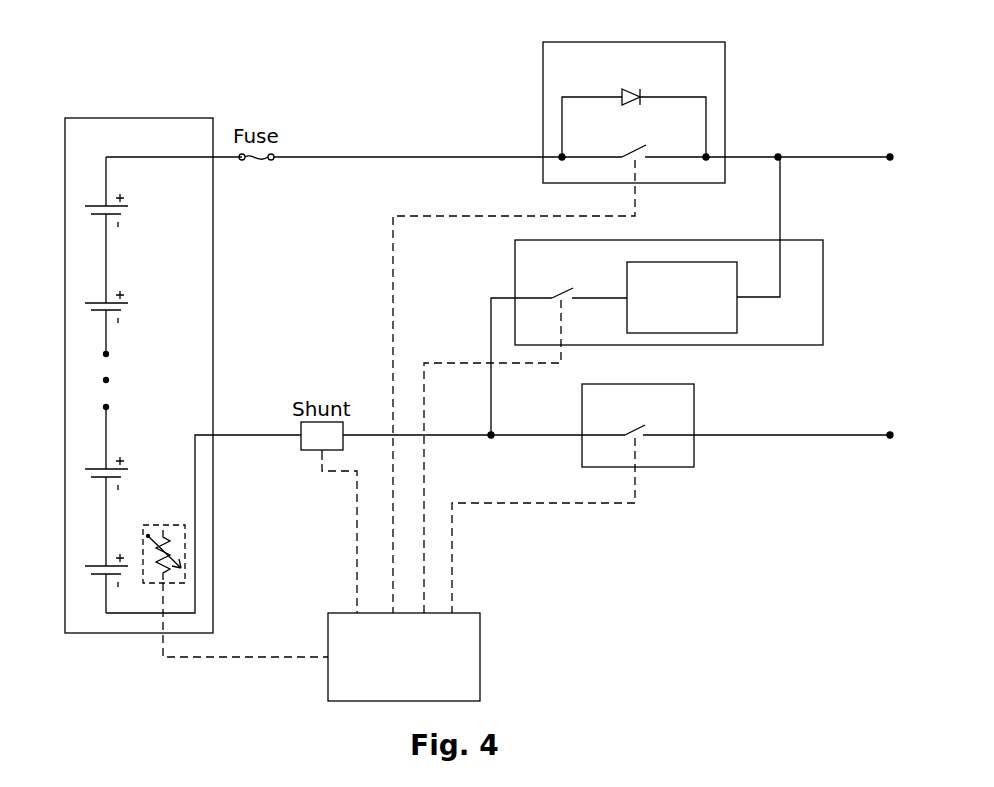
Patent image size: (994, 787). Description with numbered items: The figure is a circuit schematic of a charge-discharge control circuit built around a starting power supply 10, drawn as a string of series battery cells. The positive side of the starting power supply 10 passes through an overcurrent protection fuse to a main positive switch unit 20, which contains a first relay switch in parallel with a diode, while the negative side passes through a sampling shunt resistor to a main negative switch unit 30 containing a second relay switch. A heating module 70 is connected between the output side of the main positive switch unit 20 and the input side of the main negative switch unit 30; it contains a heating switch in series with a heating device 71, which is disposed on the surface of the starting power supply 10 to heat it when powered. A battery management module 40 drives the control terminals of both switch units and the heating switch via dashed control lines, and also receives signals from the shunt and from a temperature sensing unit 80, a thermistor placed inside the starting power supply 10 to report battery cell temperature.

The starting power supply 10 is at (140, 118).
The main positive switch unit 20 is at (634, 42).
The main negative switch unit 30 is at (694, 418).
The battery management module 40 is at (480, 650).
The heating module 70 is at (623, 385).
The heating device 71 is at (683, 262).
The temperature sensing unit 80 is at (185, 553).